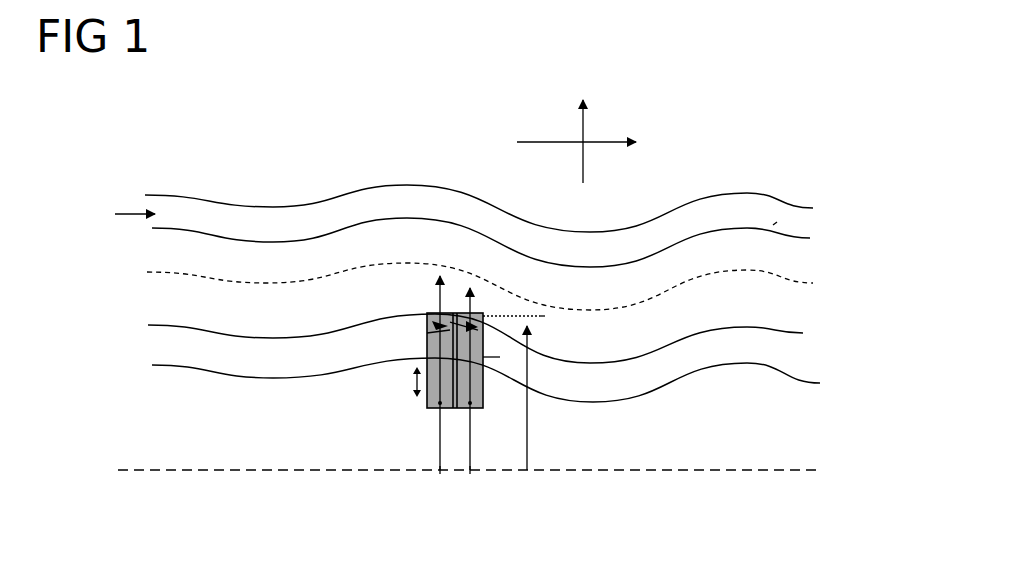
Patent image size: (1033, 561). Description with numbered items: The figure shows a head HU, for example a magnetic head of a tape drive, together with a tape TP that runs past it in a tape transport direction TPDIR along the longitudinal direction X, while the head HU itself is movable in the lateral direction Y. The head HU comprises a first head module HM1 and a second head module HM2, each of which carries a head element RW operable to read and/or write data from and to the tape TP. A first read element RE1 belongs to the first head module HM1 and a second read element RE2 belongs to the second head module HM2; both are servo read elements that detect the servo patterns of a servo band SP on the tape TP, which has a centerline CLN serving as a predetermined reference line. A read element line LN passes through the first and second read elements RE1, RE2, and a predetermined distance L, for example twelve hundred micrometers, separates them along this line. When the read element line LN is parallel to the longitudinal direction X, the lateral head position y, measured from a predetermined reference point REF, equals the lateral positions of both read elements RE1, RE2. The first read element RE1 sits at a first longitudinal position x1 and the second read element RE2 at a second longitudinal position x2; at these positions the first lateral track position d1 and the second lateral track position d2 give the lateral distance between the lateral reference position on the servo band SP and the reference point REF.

The tape TP is at (707, 208).
The tape transport direction TPDIR is at (87, 213).
The servo band SP is at (758, 265).
The centerline CLN is at (805, 282).
The first read element RE1 is at (430, 318).
The second read element RE2 is at (472, 313).
The read element line LN is at (540, 317).
The head element RW is at (483, 328).
The first head module HM1 is at (428, 363).
The second head module HM2 is at (483, 357).
The predetermined distance L is at (428, 333).
The head HU is at (427, 400).
The reference point REF is at (490, 473).
The first lateral track position d1 is at (424, 373).
The second lateral track position d2 is at (483, 379).
The lateral head position y is at (587, 398).
The first longitudinal position x1 is at (437, 487).
The second longitudinal position x2 is at (477, 487).
The longitudinal direction X is at (592, 144).
The lateral direction Y is at (582, 123).